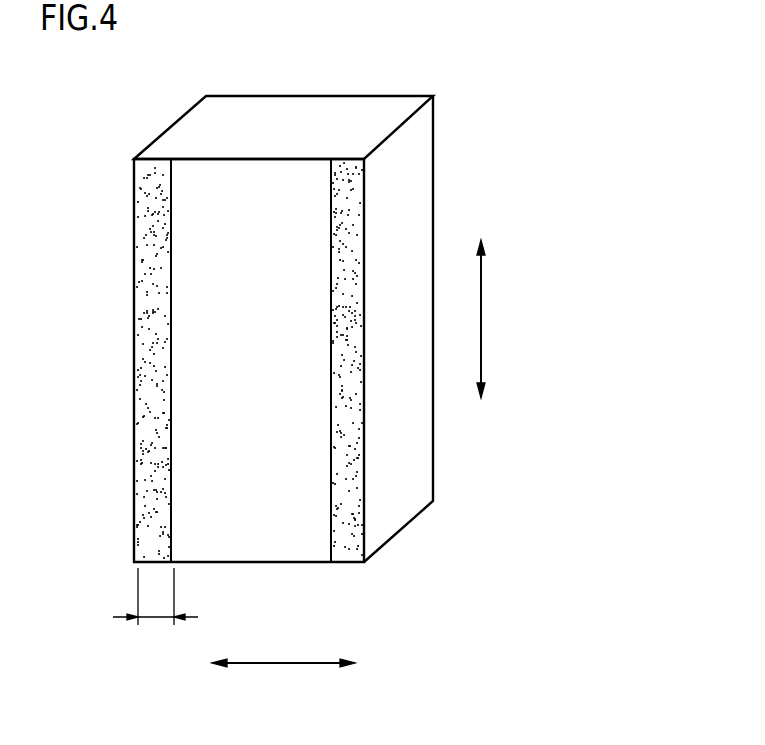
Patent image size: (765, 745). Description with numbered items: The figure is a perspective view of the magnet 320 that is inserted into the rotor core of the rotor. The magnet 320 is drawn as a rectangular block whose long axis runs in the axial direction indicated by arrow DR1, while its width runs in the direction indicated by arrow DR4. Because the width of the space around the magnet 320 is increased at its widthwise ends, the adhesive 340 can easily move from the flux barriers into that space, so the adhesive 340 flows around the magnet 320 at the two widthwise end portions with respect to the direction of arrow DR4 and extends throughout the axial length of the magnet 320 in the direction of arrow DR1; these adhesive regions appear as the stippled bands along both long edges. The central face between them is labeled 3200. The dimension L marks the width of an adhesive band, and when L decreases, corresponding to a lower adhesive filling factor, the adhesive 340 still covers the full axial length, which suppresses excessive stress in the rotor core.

The magnet 320 is at (283, 125).
The adhesive 340 is at (365, 198).
The central region of front surface 3200 is at (265, 493).
The arrow DR1 is at (482, 322).
The arrow DR4 is at (272, 663).
The element L is at (155, 596).